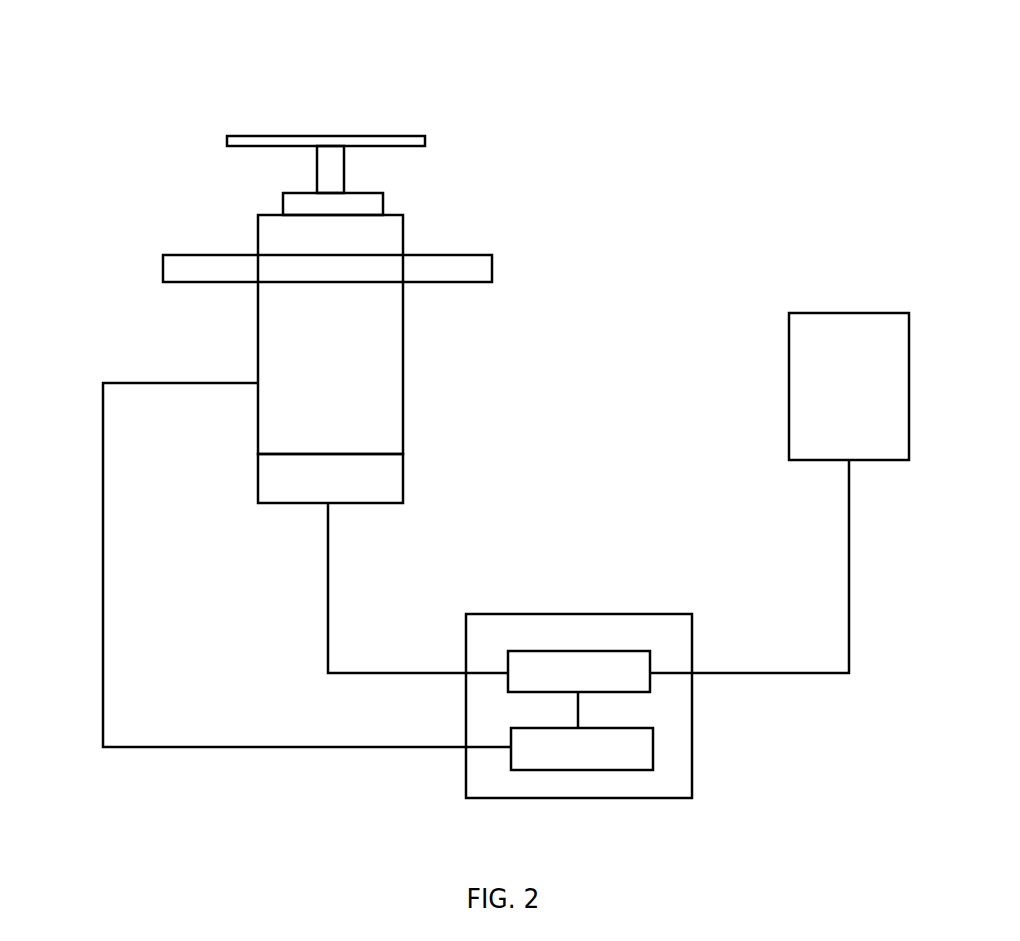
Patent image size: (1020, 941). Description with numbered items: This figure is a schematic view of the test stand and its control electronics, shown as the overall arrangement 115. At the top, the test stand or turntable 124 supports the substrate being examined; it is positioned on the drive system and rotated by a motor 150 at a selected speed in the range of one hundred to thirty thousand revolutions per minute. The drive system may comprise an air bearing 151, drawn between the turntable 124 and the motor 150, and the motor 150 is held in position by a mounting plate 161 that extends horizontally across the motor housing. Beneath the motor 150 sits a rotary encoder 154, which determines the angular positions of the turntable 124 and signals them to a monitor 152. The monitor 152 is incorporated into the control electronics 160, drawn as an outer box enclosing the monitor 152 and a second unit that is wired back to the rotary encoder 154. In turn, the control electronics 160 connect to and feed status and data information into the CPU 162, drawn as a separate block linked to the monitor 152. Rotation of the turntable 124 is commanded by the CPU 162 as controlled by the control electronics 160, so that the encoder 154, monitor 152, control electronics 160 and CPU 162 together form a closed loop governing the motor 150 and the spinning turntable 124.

The plasma processing system 115 is at (455, 183).
The turntable 124 is at (283, 136).
The air bearing 151 is at (317, 164).
The motor 150 is at (403, 415).
The mounting plate 161 is at (163, 268).
The rotary encoder 154 is at (274, 503).
The control electronics 160 is at (533, 612).
The monitor 152 is at (623, 651).
The CPU 162 is at (836, 313).